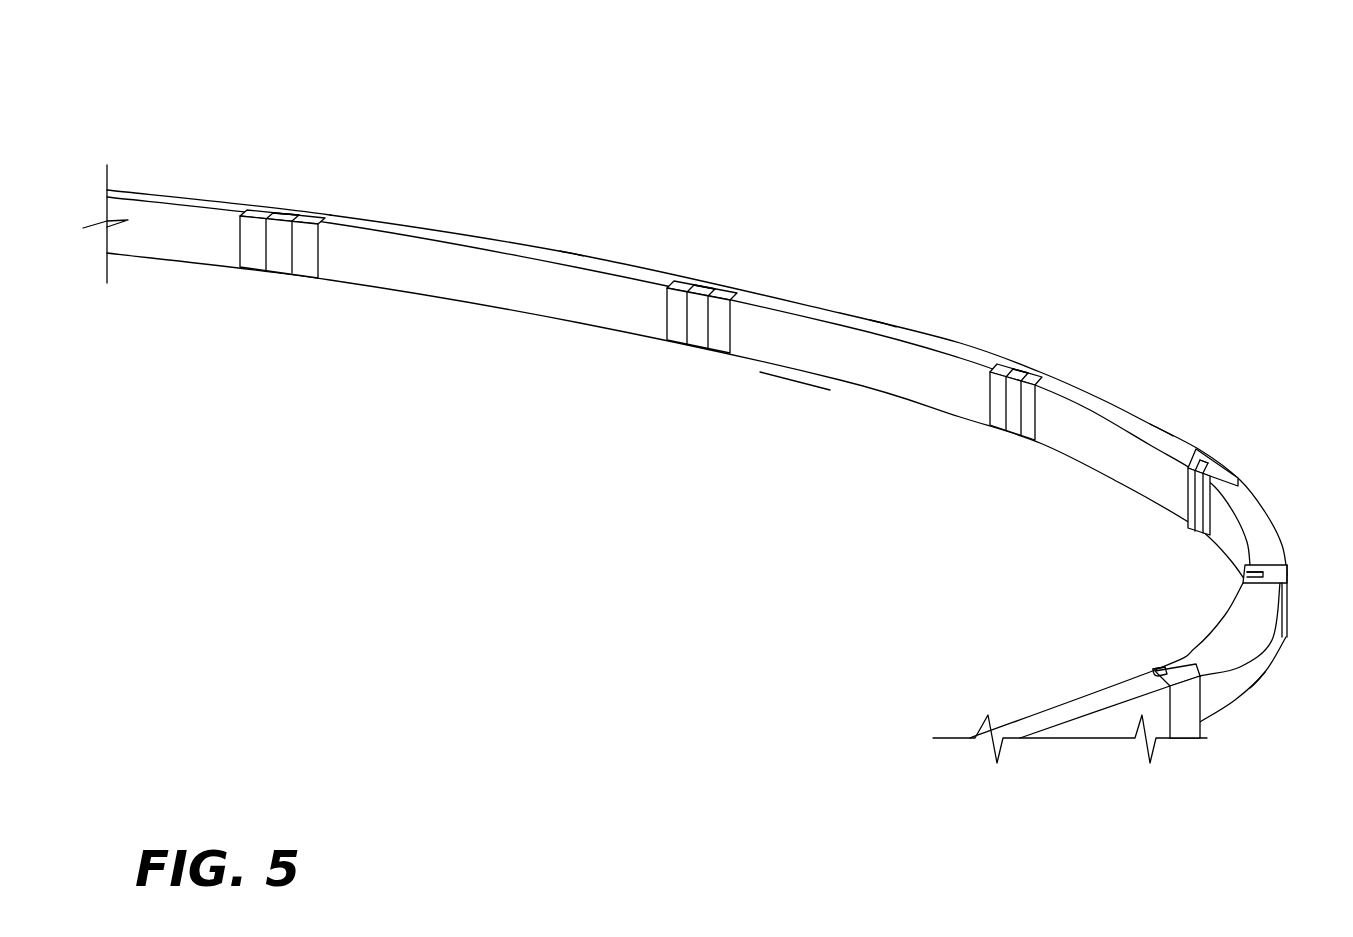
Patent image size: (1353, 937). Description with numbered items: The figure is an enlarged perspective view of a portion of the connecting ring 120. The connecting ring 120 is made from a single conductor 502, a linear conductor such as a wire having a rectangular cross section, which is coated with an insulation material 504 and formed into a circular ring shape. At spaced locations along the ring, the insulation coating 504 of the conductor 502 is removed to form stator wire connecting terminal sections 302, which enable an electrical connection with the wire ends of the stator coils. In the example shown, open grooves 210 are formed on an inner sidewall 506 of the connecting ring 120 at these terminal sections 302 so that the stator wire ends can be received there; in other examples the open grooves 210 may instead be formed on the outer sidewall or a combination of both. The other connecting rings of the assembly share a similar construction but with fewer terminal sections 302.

The connecting ring 120 is at (102, 90).
The open grooves 210 is at (283, 278).
The stator wire connecting terminal sections 302 is at (282, 212).
The conductor 502 is at (514, 224).
The insulation material 504 is at (583, 257).
The inner sidewall 506 is at (807, 358).